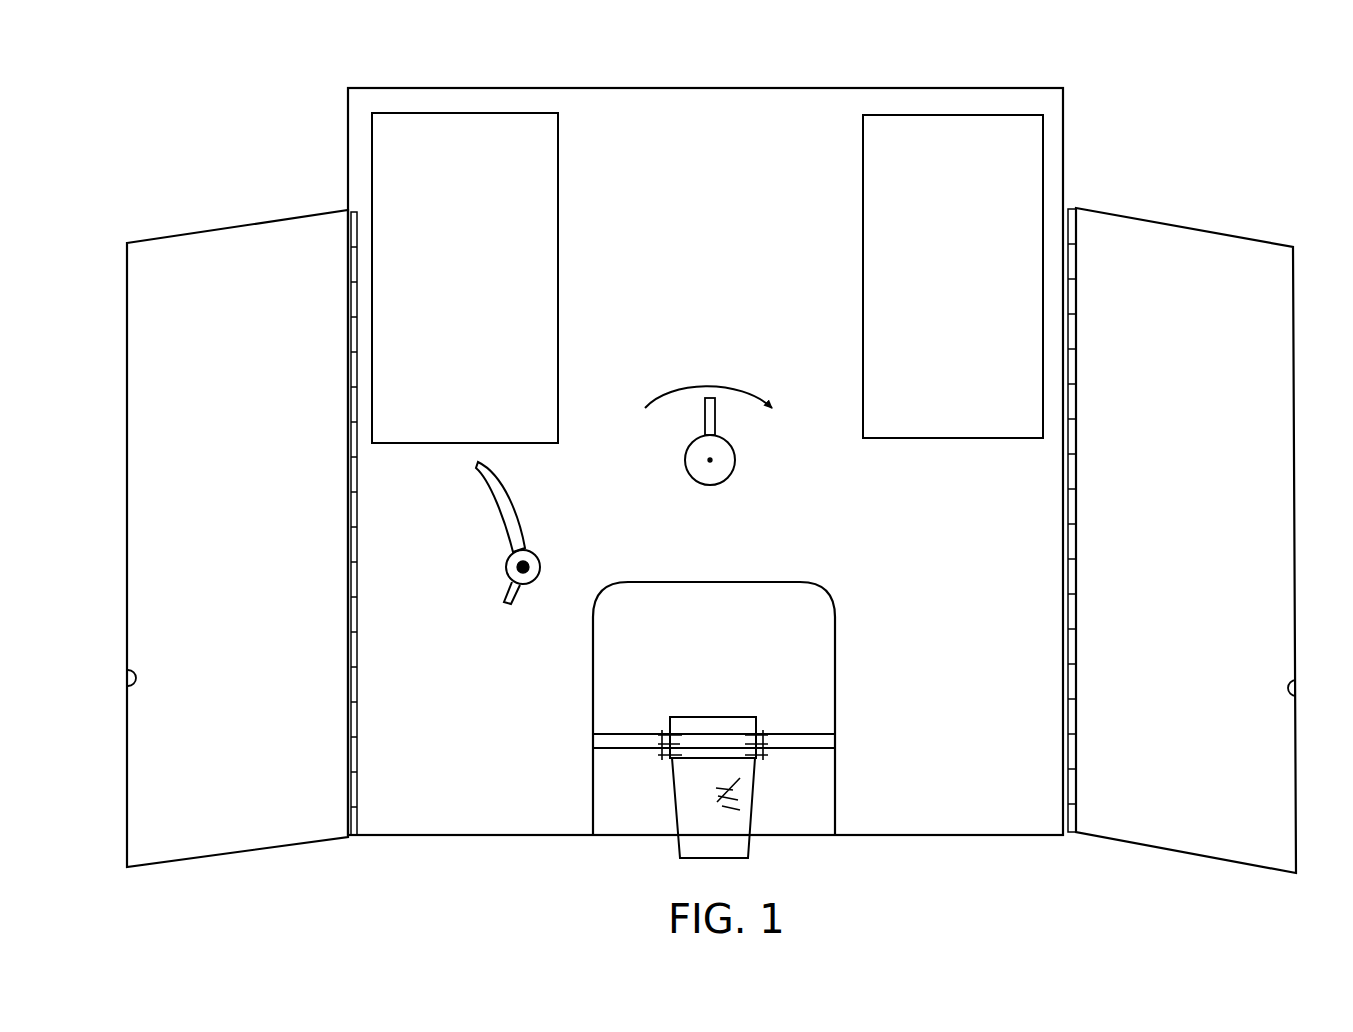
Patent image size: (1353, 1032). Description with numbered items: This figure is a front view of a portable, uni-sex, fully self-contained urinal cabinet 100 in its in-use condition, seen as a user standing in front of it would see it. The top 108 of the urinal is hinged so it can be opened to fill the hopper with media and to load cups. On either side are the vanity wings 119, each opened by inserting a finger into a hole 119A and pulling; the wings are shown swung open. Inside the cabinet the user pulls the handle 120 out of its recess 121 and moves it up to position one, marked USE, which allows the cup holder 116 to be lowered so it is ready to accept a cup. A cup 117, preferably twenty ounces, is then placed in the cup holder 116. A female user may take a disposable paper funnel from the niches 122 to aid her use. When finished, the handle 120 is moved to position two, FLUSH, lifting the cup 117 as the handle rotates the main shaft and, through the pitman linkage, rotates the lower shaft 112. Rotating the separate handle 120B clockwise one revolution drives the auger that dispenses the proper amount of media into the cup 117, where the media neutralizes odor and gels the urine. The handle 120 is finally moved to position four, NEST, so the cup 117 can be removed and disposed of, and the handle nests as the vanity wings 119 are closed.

The urinal cabinet 100 is at (1030, 100).
The top 108 is at (700, 78).
The lower shaft 112 is at (614, 755).
The cup holder 116 is at (712, 740).
The cup 117 is at (730, 805).
The vanity wings 119 is at (262, 300).
The hole 119A is at (145, 688).
The handle 120 is at (508, 575).
The handle 120B is at (733, 478).
The recess 121 is at (512, 550).
The niches 122 is at (414, 182).